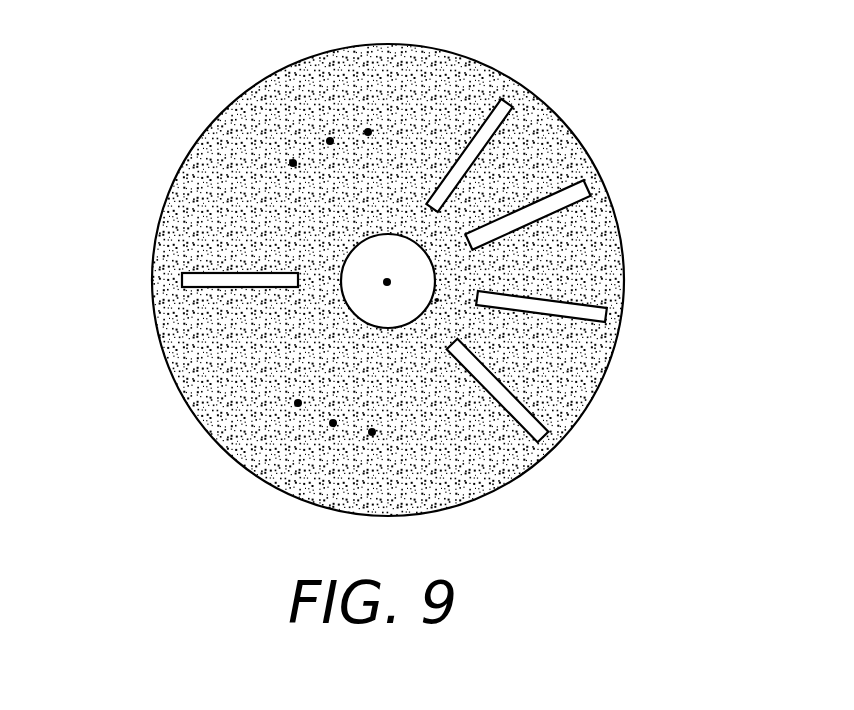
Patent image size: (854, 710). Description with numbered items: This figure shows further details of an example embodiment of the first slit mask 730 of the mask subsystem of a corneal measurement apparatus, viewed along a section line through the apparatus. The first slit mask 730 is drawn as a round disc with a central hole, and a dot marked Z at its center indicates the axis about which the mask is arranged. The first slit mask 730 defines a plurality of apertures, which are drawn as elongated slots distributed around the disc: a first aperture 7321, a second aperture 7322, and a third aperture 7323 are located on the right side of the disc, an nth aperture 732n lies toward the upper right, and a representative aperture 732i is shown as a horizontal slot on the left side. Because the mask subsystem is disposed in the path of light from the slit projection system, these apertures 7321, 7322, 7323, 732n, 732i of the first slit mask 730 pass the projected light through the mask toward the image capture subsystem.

The first slit mask 730 is at (250, 92).
The central axis Z is at (387, 282).
The aperture 732i is at (197, 272).
The aperture 732n is at (507, 100).
The aperture 7321 is at (590, 187).
The aperture 7322 is at (607, 310).
The aperture 7323 is at (548, 438).